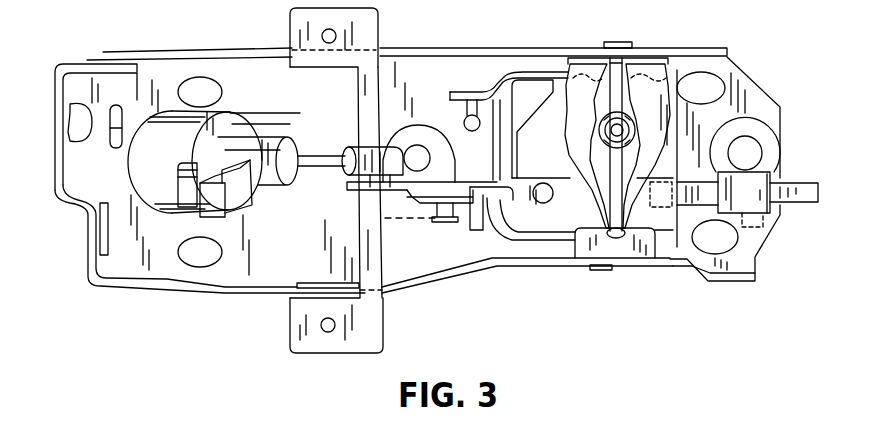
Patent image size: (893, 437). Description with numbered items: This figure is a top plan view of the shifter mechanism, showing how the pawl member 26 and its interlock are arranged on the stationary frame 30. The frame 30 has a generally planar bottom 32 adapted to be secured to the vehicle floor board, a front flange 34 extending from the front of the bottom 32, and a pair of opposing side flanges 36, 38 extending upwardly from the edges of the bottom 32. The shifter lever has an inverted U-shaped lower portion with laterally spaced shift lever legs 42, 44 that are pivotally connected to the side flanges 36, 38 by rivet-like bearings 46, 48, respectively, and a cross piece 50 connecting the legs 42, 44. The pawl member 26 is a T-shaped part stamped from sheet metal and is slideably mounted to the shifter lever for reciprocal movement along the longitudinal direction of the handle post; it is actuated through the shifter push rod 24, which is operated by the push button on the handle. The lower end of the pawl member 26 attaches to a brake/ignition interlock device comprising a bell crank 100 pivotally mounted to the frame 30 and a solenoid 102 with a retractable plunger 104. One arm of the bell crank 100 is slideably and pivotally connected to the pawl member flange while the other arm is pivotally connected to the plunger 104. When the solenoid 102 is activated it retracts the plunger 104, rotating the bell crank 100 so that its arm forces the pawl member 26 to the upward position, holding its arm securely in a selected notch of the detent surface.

The shifter push rod 24 is at (624, 130).
The pawl member 26 is at (617, 193).
The stationary frame 30 is at (734, 170).
The bottom 32 is at (313, 245).
The front flange 34 is at (62, 198).
The side flange 36 is at (482, 264).
The side flange 38 is at (452, 50).
The shift lever leg 42 is at (516, 65).
The shift lever leg 44 is at (538, 255).
The rivet-like bearing 46 is at (616, 46).
The rivet-like bearing 48 is at (612, 268).
The cross piece 50 is at (553, 153).
The bell crank 100 is at (413, 200).
The solenoid 102 is at (172, 110).
The retractable plunger 104 is at (326, 150).